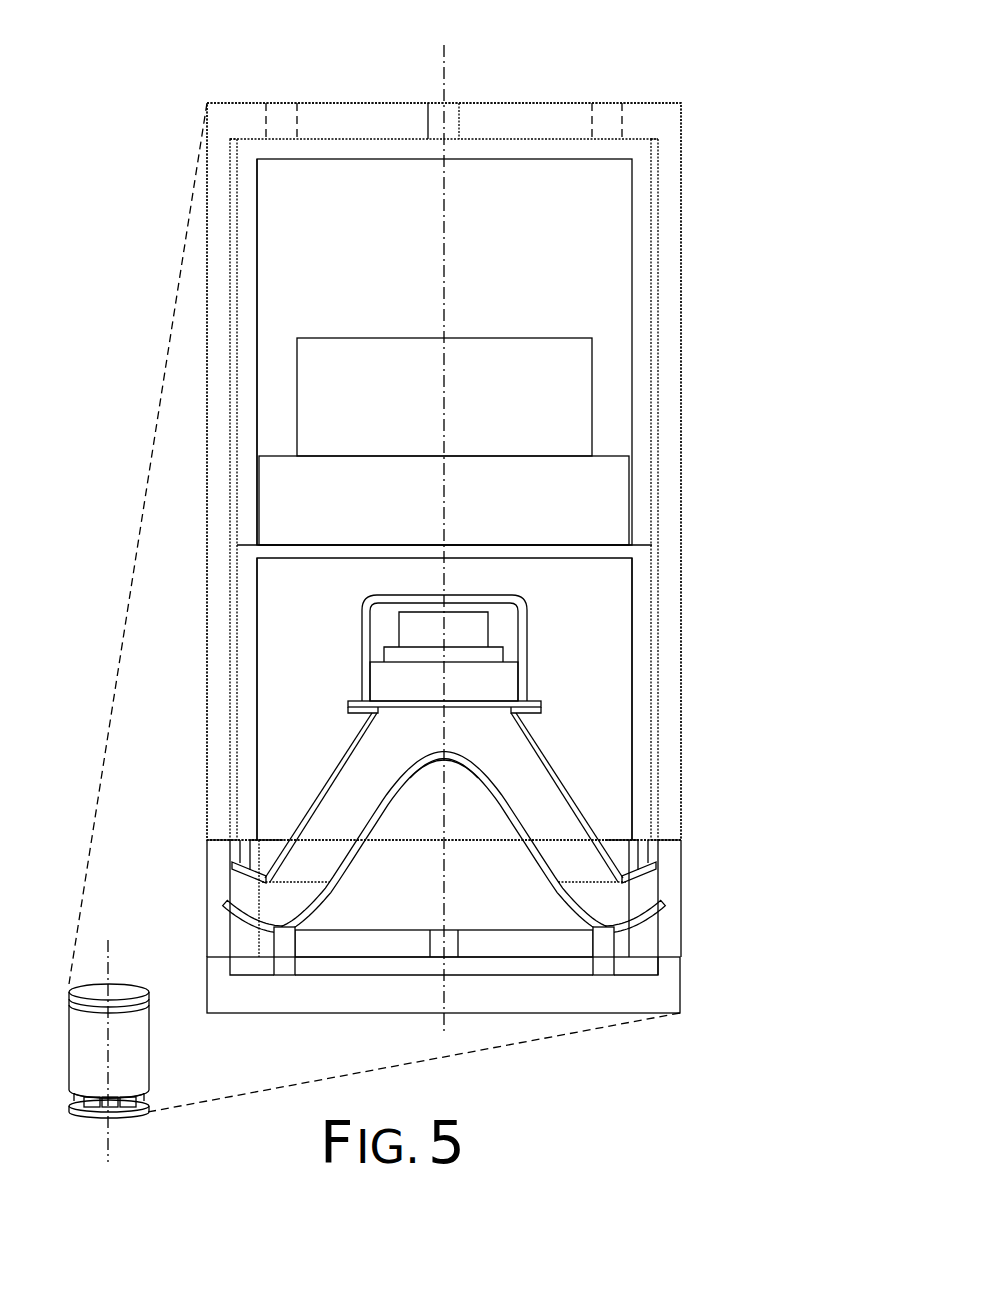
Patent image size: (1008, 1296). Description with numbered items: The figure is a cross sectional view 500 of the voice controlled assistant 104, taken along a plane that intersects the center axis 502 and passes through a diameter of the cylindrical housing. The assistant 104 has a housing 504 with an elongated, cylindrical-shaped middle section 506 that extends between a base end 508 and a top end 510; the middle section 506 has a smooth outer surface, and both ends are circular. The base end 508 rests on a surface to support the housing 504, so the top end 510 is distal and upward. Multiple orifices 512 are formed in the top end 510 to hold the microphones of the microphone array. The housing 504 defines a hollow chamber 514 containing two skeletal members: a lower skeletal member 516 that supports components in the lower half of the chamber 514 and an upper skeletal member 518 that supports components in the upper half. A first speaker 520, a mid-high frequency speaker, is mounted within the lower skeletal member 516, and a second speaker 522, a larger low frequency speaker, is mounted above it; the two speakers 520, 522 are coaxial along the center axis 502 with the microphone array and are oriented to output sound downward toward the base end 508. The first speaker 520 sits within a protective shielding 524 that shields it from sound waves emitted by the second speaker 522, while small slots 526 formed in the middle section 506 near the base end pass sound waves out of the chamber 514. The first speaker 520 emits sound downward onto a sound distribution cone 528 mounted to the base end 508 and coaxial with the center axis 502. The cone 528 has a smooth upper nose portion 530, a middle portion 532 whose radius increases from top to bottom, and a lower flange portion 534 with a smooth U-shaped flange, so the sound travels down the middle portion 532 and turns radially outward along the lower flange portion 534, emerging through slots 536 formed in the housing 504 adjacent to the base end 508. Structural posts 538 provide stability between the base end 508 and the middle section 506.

The voice controlled assistant 104 is at (140, 1122).
The cross sectional view 500 is at (631, 52).
The center axis 502 is at (445, 66).
The housing 504 is at (352, 98).
The cylindrical-shaped middle section 506 is at (665, 337).
The base end 508 is at (580, 1005).
The top end 510 is at (510, 115).
The orifices 512 is at (282, 122).
The hollow chamber 514 is at (533, 254).
The lower skeletal member 516 is at (257, 628).
The upper skeletal member 518 is at (257, 247).
The first speaker 520 is at (503, 683).
The second speaker 522 is at (513, 357).
The protective shielding 524 is at (527, 615).
The slots 526 is at (655, 861).
The sound distribution cone 528 is at (370, 860).
The upper nose portion 530 is at (458, 760).
The middle portion 532 is at (518, 840).
The lower flange portion 534 is at (653, 920).
The slots 536 is at (215, 872).
The structural posts 538 is at (228, 903).